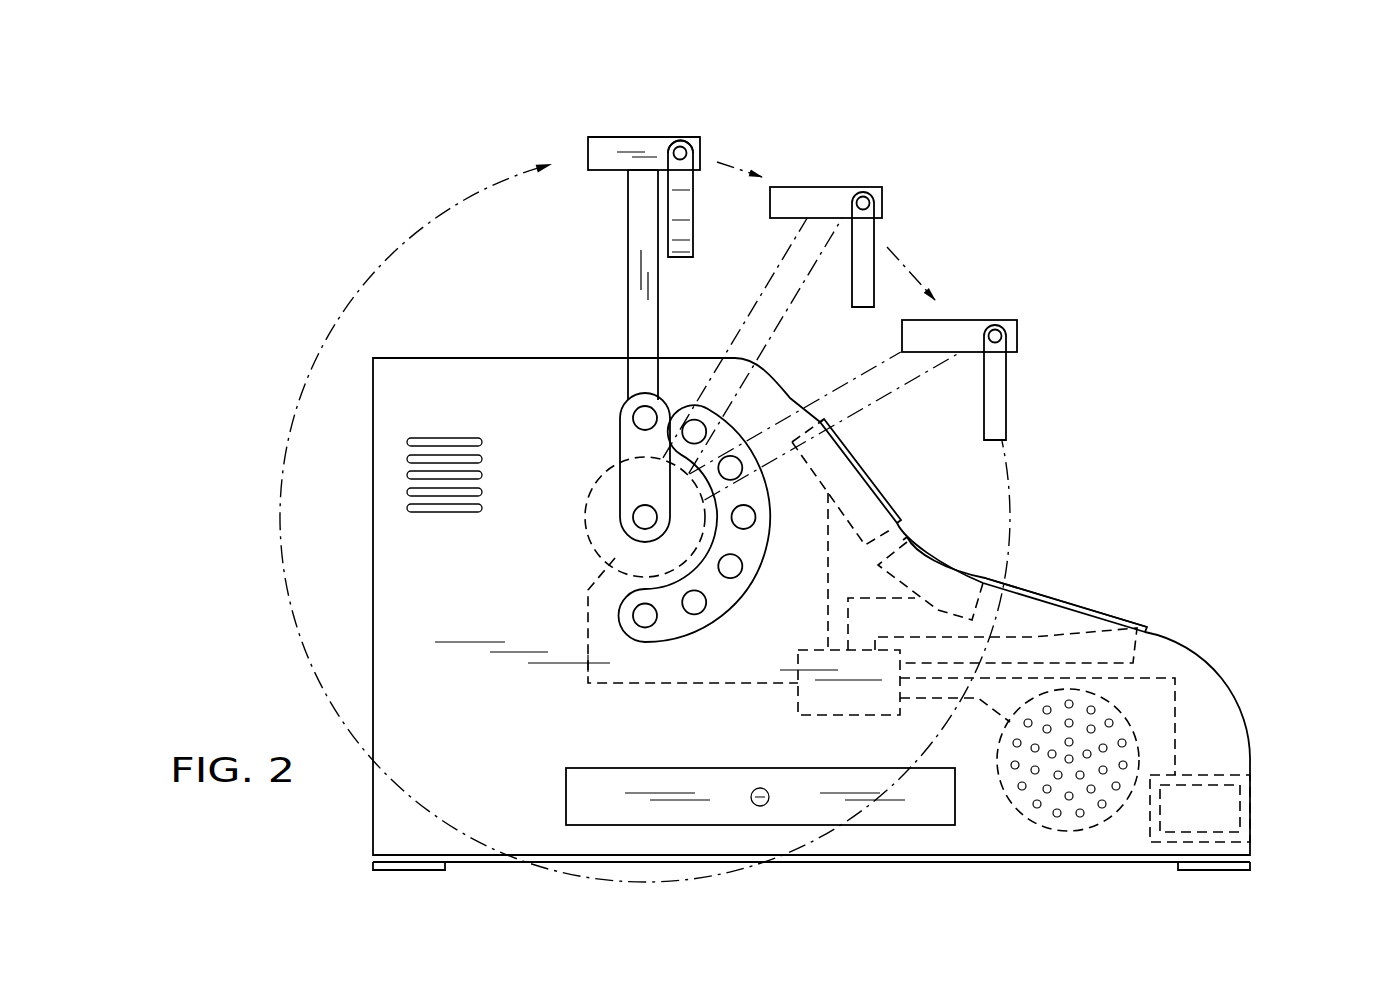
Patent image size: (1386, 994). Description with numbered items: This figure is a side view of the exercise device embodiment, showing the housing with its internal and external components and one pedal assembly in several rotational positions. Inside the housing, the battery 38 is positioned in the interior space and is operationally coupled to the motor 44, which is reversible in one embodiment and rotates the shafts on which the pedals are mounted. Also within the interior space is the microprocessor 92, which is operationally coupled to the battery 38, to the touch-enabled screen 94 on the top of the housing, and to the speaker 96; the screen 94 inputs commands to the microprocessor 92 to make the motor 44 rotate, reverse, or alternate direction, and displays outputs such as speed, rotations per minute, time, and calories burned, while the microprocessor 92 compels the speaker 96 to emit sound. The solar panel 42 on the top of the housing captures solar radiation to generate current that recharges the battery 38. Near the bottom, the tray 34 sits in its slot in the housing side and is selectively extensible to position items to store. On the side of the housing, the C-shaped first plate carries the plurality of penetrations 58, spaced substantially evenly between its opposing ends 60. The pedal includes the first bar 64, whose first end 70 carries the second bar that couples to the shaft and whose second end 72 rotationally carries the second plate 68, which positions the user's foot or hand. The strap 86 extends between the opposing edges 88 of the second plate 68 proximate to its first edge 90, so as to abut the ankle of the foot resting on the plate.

The tray 34 is at (638, 817).
The battery 38 is at (1253, 765).
The solar panel 42 is at (962, 566).
The motor 44 is at (588, 494).
The penetrations 58 is at (745, 567).
The opposing ends 60 is at (617, 616).
The first bar 64 is at (636, 268).
The second plate 68 is at (611, 135).
The first end 70 is at (618, 534).
The second end 72 is at (635, 173).
The strap 86 is at (684, 209).
The opposing edges 88 is at (648, 136).
The first edge 90 is at (702, 142).
The microprocessor 92 is at (864, 673).
The screen 94 is at (1098, 606).
The speaker 96 is at (1201, 813).